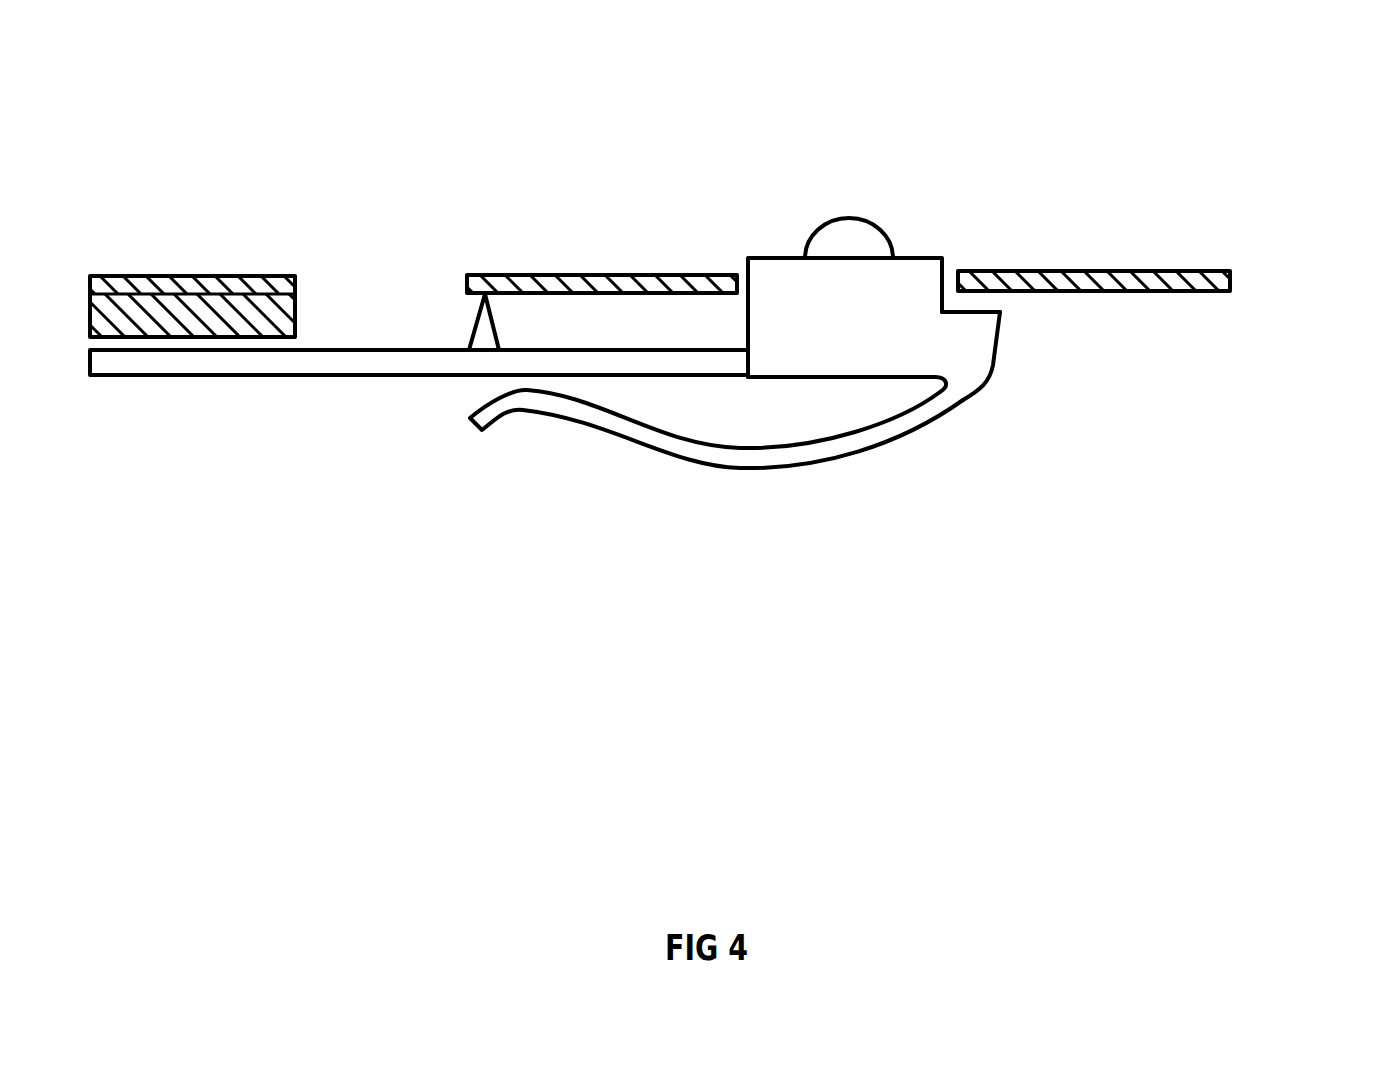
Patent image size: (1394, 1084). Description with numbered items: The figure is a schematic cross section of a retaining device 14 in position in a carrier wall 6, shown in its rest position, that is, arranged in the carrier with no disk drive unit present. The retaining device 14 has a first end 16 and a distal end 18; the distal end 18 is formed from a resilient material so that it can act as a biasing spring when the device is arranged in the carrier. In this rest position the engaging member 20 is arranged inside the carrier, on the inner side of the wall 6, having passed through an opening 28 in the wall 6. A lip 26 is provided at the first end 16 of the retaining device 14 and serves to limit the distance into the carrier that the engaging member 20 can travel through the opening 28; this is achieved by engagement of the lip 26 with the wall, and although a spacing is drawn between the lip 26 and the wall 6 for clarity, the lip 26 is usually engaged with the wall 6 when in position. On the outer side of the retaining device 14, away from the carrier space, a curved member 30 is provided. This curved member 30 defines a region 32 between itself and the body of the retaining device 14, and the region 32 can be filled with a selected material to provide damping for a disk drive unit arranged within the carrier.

The carrier wall 6 is at (1205, 308).
The retaining device 14 is at (596, 558).
The first end 16 is at (1008, 427).
The distal end 18 is at (236, 440).
The engaging member 20 is at (815, 228).
The lip 26 is at (1020, 322).
The opening 28 is at (920, 218).
The curved member 30 is at (674, 468).
The region 32 is at (763, 420).